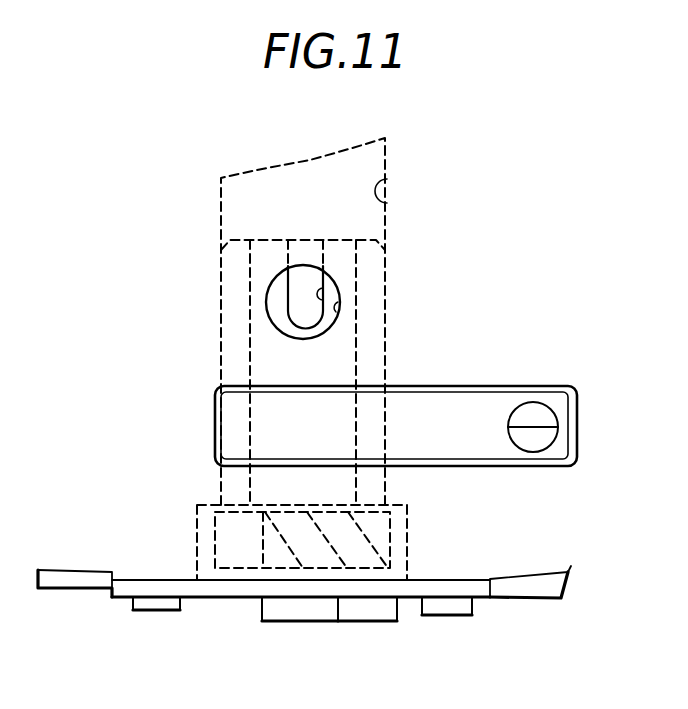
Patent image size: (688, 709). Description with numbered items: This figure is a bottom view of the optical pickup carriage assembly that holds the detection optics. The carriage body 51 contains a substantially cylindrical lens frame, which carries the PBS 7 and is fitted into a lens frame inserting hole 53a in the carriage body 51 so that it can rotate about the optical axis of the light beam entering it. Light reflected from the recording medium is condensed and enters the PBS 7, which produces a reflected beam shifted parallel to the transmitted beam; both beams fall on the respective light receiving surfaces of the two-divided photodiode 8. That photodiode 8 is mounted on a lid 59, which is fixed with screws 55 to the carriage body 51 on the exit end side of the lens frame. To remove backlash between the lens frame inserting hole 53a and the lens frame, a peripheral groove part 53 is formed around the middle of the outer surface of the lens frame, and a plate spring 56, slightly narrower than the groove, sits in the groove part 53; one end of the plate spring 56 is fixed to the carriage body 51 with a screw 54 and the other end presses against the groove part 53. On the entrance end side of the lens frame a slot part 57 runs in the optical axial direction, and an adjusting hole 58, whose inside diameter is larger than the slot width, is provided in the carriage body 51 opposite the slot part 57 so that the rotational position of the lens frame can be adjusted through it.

The PBS 7 is at (290, 582).
The two-divided photodiode 8 is at (318, 622).
The carriage body 51 is at (68, 590).
The peripheral groove part 53 is at (282, 393).
The lens frame inserting hole 53a is at (390, 181).
The screw 54 is at (548, 405).
The screws 55 is at (445, 615).
The plate spring 56 is at (487, 388).
The slot part 57 is at (325, 282).
The adjusting hole 58 is at (338, 300).
The lid 59 is at (200, 598).